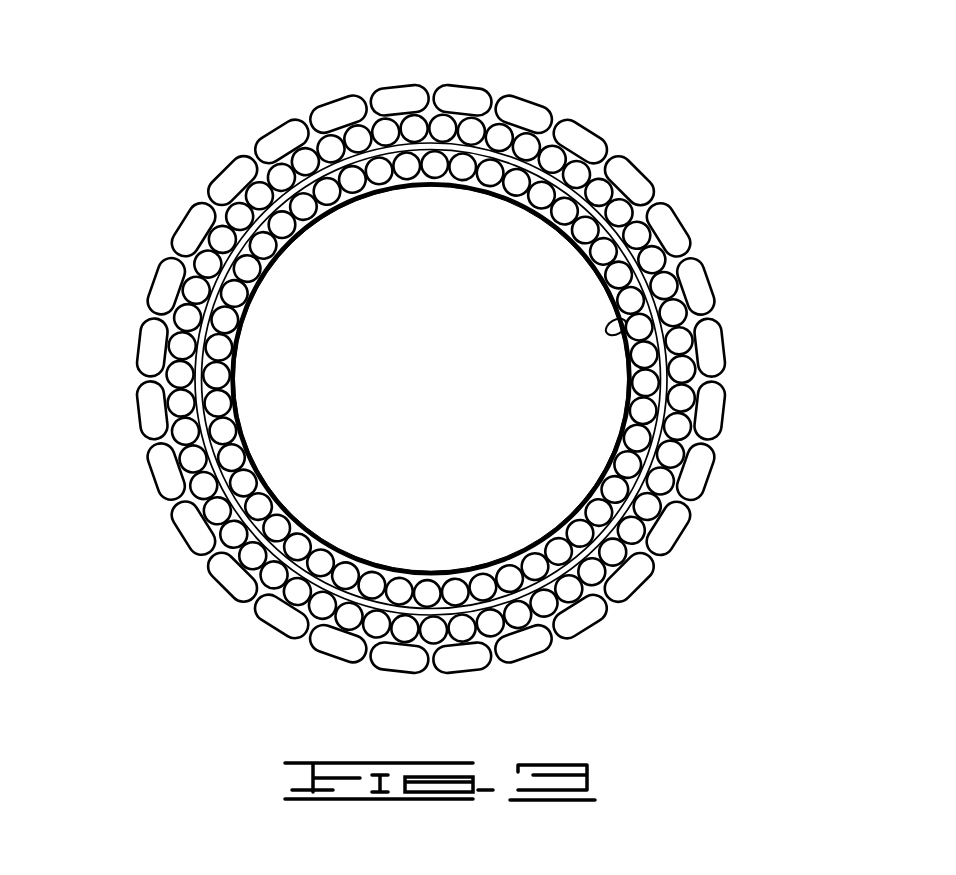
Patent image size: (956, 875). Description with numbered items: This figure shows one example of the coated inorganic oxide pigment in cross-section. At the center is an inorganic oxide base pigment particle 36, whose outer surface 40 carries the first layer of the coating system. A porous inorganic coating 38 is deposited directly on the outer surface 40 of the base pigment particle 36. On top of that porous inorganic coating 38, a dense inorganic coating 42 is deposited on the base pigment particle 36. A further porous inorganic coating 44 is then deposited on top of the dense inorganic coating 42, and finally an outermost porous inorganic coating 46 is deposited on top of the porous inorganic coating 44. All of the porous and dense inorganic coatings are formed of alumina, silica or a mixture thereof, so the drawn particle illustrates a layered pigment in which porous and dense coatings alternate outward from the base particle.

The inorganic oxide base pigment particle 36 is at (447, 381).
The porous inorganic coating 38 is at (458, 162).
The outer surface 40 is at (630, 334).
The dense inorganic coating 42 is at (655, 272).
The porous inorganic coating 44 is at (352, 138).
The porous inorganic coating 46 is at (400, 95).